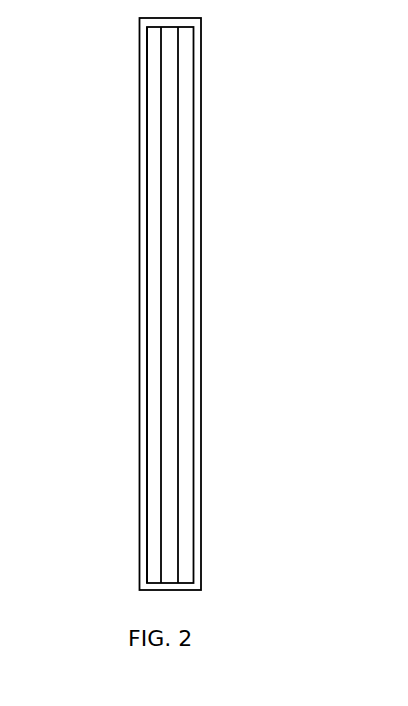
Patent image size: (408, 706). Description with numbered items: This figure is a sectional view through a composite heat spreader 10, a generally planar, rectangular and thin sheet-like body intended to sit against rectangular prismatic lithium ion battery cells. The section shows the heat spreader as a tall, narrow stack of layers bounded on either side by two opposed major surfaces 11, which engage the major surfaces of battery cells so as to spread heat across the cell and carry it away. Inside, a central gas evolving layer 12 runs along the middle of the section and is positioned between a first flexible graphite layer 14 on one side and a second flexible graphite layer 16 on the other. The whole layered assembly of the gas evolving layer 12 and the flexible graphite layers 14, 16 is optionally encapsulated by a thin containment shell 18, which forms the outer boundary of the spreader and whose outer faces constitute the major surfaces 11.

The composite heat spreader 10 is at (190, 295).
The major surfaces 11 is at (201, 403).
The central gas evolving layer 12 is at (167, 120).
The first flexible graphite layer 14 is at (185, 188).
The second flexible graphite layer 16 is at (153, 250).
The containment shell 18 is at (201, 333).